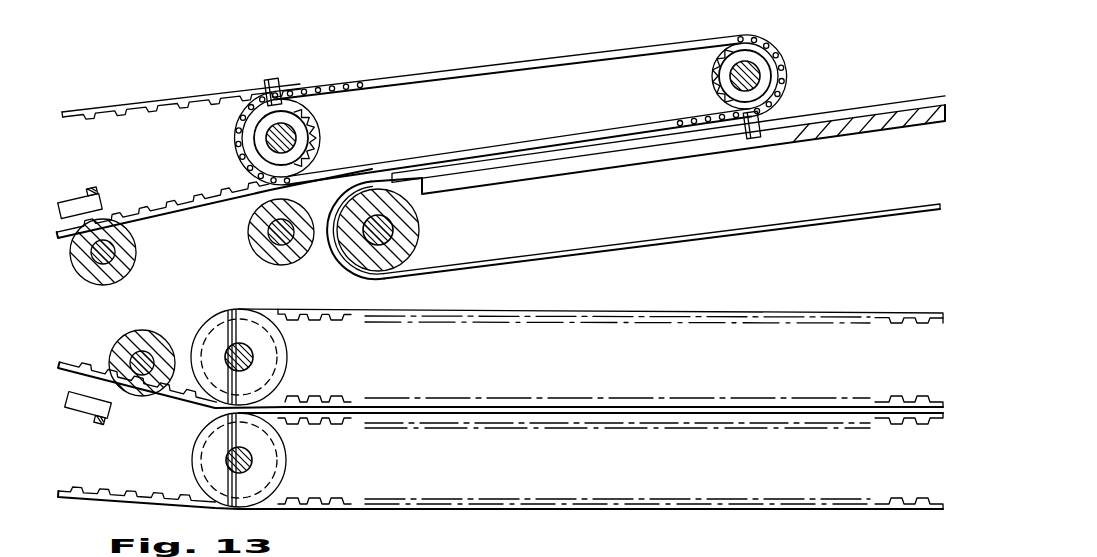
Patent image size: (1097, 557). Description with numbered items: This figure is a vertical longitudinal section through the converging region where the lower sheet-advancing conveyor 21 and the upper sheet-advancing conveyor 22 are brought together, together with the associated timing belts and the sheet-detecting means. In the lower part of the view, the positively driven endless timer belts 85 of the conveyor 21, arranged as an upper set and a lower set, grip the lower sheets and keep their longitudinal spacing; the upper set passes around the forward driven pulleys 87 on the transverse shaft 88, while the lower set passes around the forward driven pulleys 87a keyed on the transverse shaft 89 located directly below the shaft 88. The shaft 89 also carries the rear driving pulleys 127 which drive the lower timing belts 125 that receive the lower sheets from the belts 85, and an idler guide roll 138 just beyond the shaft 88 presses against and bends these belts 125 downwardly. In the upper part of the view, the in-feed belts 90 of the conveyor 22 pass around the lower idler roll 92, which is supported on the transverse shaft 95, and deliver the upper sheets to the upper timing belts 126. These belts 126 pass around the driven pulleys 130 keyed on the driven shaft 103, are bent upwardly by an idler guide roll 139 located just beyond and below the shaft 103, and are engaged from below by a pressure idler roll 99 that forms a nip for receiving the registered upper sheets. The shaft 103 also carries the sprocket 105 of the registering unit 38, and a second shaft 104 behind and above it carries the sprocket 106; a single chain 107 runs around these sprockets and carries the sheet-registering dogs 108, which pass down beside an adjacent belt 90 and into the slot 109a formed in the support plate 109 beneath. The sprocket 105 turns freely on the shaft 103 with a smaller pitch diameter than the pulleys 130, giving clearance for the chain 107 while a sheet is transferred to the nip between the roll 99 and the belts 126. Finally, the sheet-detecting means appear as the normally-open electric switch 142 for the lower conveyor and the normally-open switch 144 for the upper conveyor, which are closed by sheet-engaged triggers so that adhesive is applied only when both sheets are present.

The sheet-advancing conveyor 21 is at (792, 299).
The sheet-advancing conveyor 22 is at (653, 168).
The registering unit 38 is at (446, 72).
The timer belts 85 is at (702, 308).
The forward driven pulleys 87 is at (282, 372).
The forward driven pulleys 87a is at (272, 474).
The transverse shaft 88 is at (254, 356).
The transverse shaft 89 is at (226, 461).
The belts 90 is at (873, 113).
The lower idler roll 92 is at (411, 240).
The transverse shaft 95 is at (387, 222).
The pressure idler roll 99 is at (249, 238).
The driven shaft 103 is at (289, 129).
The shaft 104 is at (762, 72).
The sprocket 105 is at (322, 130).
The sprocket 106 is at (705, 80).
The chain 107 is at (535, 62).
The sheet-registering dogs 108 is at (277, 78).
The support plate 109 is at (719, 146).
The slot 109a is at (556, 172).
The lower timing belts 125 is at (106, 492).
The upper timing belts 126 is at (133, 108).
The rear driving pulleys 127 is at (288, 453).
The driven pulleys 130 is at (236, 138).
The idler guide roll 138 is at (152, 342).
The idler guide roll 139 is at (108, 236).
The electric switch 142 is at (100, 408).
The switch 144 is at (82, 198).